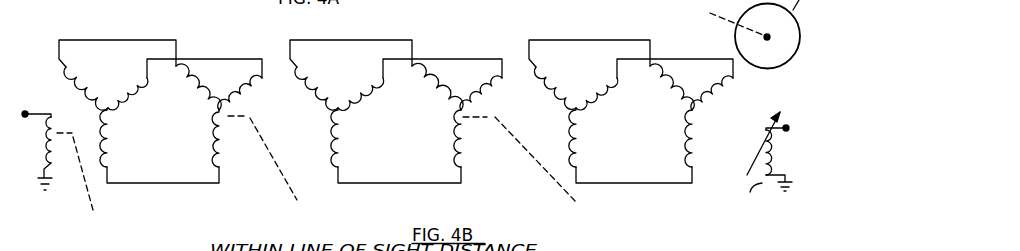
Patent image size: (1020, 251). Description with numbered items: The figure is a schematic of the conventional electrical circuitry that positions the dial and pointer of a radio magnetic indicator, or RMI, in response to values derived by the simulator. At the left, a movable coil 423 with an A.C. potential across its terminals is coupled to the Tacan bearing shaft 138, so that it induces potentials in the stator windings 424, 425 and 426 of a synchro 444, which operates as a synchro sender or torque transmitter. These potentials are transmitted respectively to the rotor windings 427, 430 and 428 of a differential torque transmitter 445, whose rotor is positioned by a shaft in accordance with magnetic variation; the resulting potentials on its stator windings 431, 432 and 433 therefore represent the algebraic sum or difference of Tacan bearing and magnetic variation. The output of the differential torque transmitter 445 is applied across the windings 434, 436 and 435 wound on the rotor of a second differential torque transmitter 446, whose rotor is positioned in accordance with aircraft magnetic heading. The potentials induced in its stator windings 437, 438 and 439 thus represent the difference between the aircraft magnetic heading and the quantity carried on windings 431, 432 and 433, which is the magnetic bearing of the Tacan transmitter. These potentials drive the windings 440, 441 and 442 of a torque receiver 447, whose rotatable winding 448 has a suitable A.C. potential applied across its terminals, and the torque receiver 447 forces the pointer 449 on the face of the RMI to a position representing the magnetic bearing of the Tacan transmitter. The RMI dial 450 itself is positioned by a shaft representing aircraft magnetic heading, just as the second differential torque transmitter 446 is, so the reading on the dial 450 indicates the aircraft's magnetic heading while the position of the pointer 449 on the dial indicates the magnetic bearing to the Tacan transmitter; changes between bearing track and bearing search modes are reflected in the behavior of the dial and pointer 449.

The Tacan bearing shaft 138 is at (80, 175).
The movable coil 423 is at (60, 108).
The stator winding 424 is at (98, 65).
The stator winding 425 is at (149, 88).
The stator winding 426 is at (112, 131).
The rotor winding 427 is at (209, 91).
The rotor winding 428 is at (223, 130).
The rotor winding 430 is at (261, 89).
The stator winding 431 is at (319, 65).
The stator winding 432 is at (378, 96).
The stator winding 433 is at (340, 132).
The rotor winding 434 is at (462, 84).
The rotor winding 435 is at (463, 130).
The rotor winding 436 is at (489, 98).
The stator winding 437 is at (561, 66).
The stator winding 438 is at (598, 110).
The stator winding 439 is at (577, 130).
The winding 440 is at (700, 82).
The winding 441 is at (729, 99).
The winding 442 is at (684, 128).
The synchro 444 is at (130, 26).
The differential torque transmitter 445 is at (298, 27).
The second differential torque transmitter 446 is at (530, 29).
The torque receiver 447 is at (737, 158).
The rotatable winding 448 is at (753, 174).
The pointer 449 is at (797, 97).
The RMI dial 450 is at (735, 39).